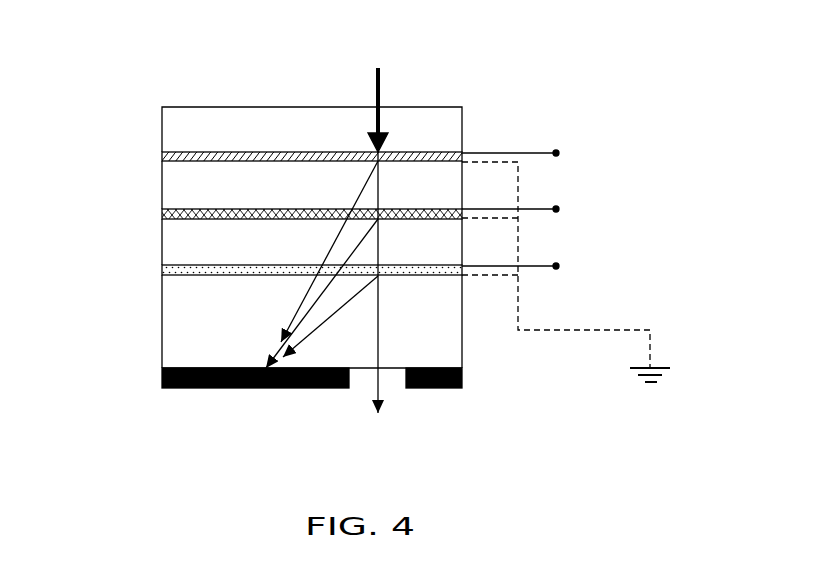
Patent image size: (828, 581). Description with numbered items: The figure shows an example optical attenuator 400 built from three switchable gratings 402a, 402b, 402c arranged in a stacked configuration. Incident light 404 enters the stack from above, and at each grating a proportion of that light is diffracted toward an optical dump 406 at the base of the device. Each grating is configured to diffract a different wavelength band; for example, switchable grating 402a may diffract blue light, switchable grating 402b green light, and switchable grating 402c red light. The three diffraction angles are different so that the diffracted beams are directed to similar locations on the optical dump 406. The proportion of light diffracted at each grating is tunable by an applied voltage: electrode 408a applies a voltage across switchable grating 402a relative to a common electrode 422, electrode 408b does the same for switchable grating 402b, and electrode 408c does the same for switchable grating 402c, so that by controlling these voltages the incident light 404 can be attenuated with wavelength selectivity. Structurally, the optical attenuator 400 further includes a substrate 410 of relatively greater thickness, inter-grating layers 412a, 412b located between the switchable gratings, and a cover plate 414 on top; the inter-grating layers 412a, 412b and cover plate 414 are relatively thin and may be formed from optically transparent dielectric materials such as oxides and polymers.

The optical attenuator 400 is at (597, 15).
The switchable grating 402a is at (295, 152).
The switchable grating 402b is at (295, 209).
The switchable grating 402c is at (295, 265).
The incident light 404 is at (329, 222).
The optical dump 406 is at (162, 378).
The electrode 408a is at (556, 153).
The electrode 408b is at (556, 209).
The electrode 408c is at (556, 266).
The substrate 410 is at (162, 305).
The inter-grating layer 412a is at (162, 182).
The inter-grating layer 412b is at (162, 239).
The cover plate 414 is at (162, 126).
The common electrode 422 is at (650, 331).